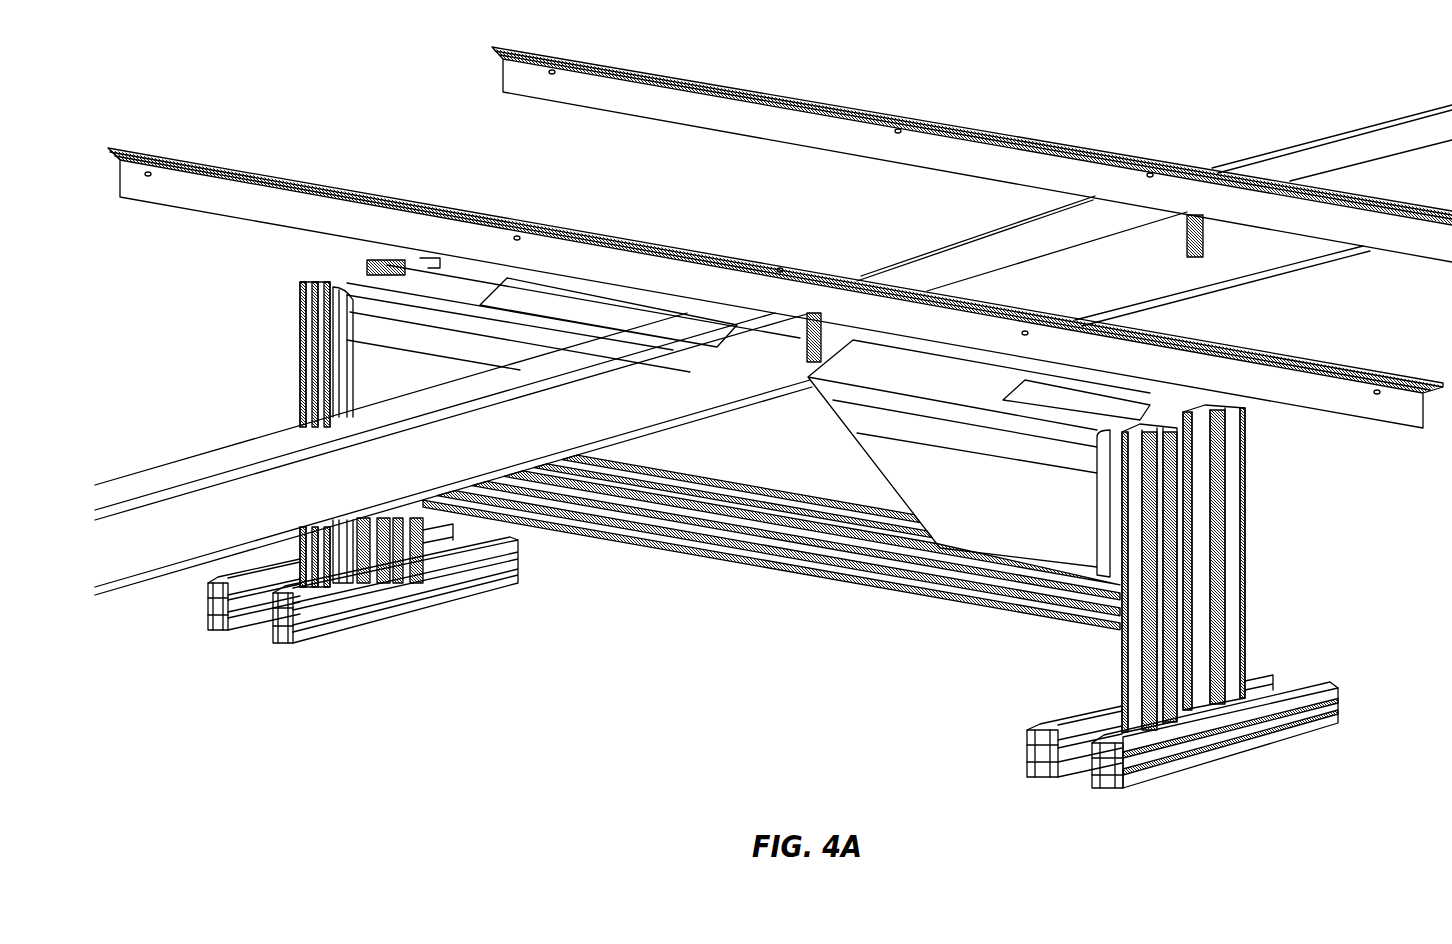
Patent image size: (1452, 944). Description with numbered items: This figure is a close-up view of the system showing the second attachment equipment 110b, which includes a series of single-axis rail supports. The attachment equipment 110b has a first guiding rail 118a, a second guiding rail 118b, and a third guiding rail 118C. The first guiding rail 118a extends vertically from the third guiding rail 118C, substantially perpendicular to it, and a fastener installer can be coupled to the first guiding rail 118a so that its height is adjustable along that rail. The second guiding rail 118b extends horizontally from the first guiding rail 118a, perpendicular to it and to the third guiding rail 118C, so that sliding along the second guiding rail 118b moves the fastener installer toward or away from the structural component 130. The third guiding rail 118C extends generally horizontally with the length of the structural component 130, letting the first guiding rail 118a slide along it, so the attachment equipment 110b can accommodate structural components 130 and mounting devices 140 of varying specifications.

The mounting device 140 is at (633, 214).
The structural component 130 is at (1213, 262).
The second attachment equipment 110b is at (716, 525).
The first guiding rail 118a is at (1232, 557).
The second guiding rail 118b is at (860, 566).
The third guiding rail 118C is at (1237, 733).